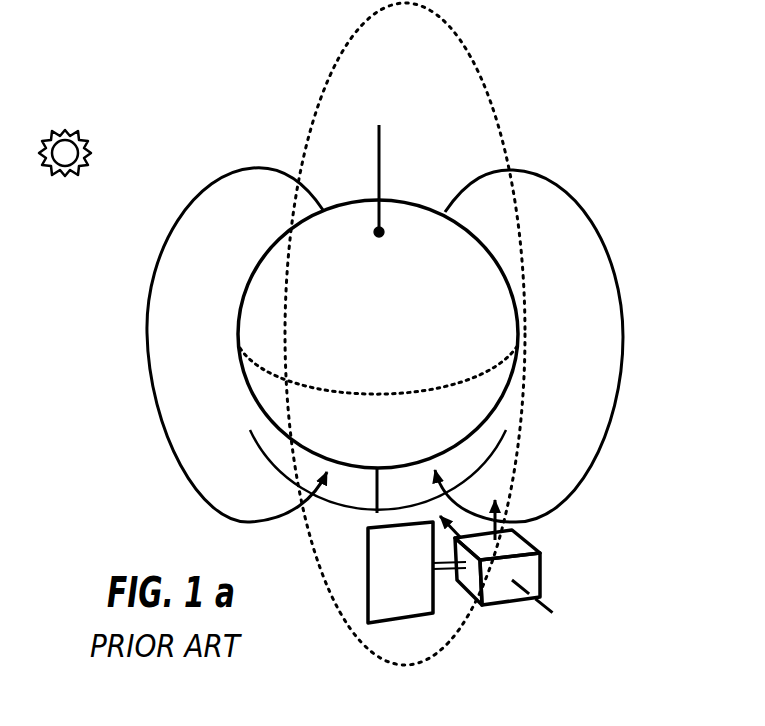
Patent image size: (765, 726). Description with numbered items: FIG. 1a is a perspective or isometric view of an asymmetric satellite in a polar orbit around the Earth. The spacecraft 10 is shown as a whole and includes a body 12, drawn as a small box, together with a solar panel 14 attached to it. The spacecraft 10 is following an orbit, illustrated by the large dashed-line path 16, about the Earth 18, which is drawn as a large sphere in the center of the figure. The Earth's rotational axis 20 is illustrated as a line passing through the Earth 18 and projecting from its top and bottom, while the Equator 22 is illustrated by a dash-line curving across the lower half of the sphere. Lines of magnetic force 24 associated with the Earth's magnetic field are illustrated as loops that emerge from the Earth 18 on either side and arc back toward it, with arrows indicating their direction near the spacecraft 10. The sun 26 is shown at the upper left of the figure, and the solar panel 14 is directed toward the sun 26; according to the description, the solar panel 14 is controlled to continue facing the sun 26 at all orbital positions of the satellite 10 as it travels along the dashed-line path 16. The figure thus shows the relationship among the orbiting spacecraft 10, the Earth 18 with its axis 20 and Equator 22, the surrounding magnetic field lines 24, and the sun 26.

The spacecraft 10 is at (459, 579).
The body 12 is at (512, 593).
The solar panel 14 is at (372, 605).
The dashed-line path 16 is at (492, 96).
The Earth 18 is at (253, 267).
The rotational axis 20 is at (379, 148).
The Equator 22 is at (325, 387).
The lines of magnetic force 24 is at (190, 495).
The sun 26 is at (80, 130).